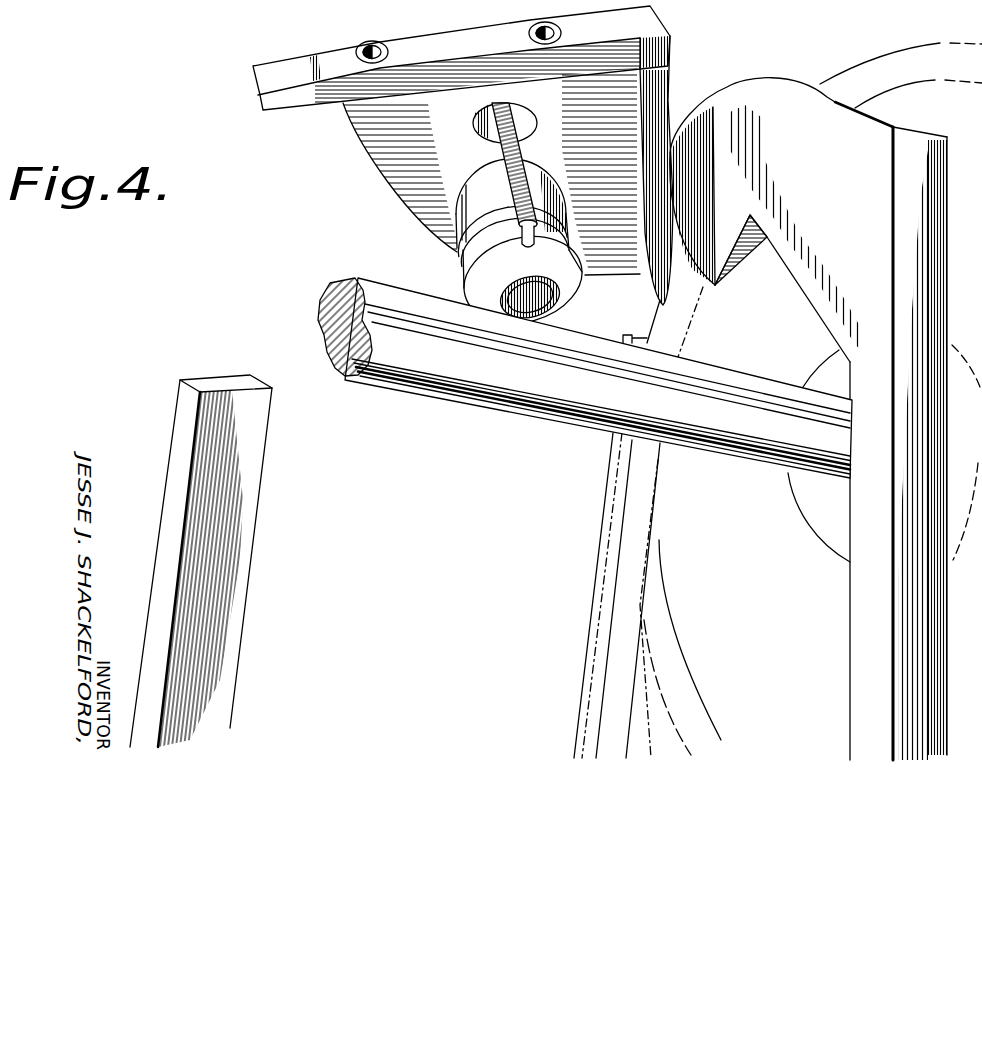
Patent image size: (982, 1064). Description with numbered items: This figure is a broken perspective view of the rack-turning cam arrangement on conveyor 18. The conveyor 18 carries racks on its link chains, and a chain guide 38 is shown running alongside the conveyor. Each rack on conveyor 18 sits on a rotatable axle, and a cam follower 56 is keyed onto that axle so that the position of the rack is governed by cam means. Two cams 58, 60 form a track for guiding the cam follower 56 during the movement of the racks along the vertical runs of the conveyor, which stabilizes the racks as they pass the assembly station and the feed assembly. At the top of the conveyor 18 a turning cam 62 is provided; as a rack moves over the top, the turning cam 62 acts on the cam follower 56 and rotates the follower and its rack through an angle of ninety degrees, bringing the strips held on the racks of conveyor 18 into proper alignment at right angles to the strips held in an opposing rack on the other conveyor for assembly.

The conveyor 18 is at (585, 501).
The chain guide 38 is at (613, 468).
The cam follower 56 is at (626, 144).
The cam 58 is at (222, 410).
The cam 60 is at (850, 588).
The turning cam 62 is at (800, 117).